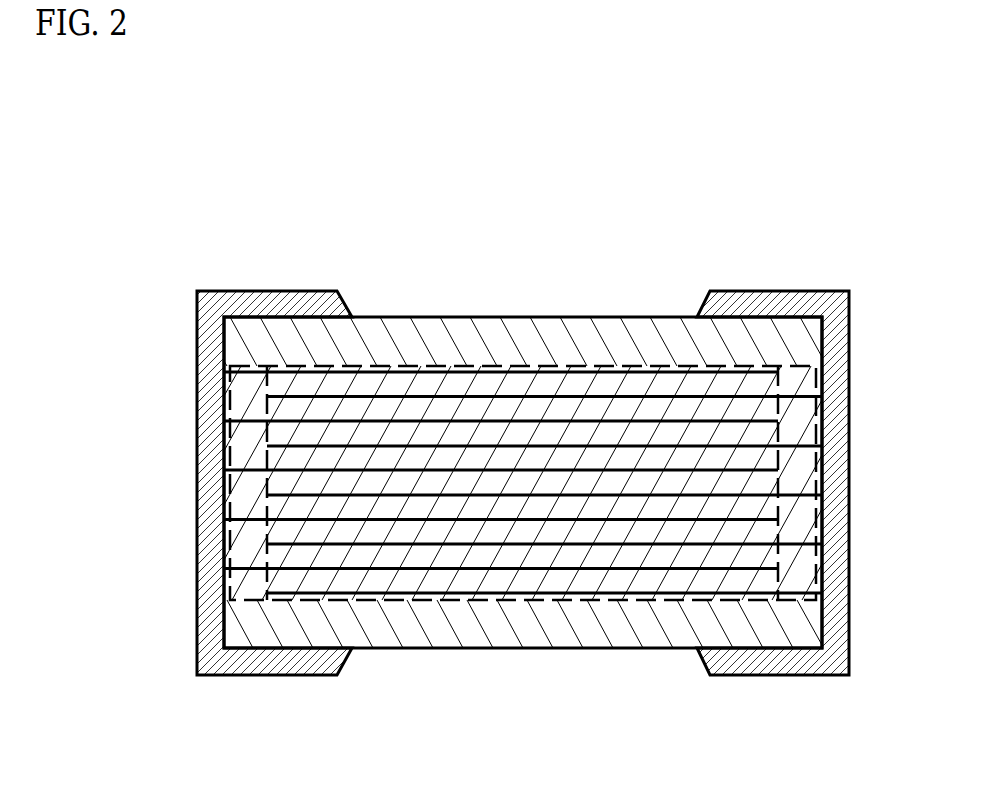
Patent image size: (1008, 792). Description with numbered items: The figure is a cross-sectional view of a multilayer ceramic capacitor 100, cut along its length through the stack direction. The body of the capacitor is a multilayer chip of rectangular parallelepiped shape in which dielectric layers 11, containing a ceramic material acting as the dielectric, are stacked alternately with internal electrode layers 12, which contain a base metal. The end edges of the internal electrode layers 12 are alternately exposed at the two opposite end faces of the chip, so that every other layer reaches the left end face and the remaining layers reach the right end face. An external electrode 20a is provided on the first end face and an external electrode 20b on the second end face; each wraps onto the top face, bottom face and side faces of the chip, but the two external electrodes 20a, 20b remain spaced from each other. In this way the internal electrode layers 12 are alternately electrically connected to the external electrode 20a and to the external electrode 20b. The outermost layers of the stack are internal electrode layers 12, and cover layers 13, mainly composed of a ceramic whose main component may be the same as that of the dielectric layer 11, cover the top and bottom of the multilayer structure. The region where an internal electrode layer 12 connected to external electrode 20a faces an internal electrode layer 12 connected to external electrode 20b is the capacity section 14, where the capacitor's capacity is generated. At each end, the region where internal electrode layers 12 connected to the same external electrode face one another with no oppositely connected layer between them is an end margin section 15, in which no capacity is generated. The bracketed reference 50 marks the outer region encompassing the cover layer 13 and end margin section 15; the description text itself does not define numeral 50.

The multilayer ceramic capacitor 100 is at (748, 233).
The external electrode 20a is at (231, 291).
The external electrode 20b is at (810, 291).
The outer portion (cover layers and side margins) 50 is at (523, 455).
The dielectric layer 11 is at (645, 557).
The internal electrode layer 12 is at (500, 520).
The cover layer 13 is at (374, 342).
The capacity section 14 is at (530, 365).
The end margin section 15 is at (385, 223).